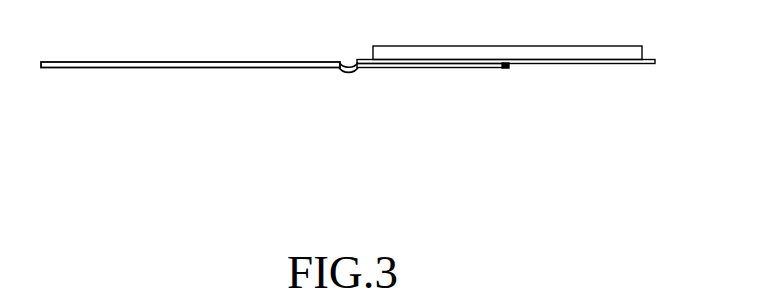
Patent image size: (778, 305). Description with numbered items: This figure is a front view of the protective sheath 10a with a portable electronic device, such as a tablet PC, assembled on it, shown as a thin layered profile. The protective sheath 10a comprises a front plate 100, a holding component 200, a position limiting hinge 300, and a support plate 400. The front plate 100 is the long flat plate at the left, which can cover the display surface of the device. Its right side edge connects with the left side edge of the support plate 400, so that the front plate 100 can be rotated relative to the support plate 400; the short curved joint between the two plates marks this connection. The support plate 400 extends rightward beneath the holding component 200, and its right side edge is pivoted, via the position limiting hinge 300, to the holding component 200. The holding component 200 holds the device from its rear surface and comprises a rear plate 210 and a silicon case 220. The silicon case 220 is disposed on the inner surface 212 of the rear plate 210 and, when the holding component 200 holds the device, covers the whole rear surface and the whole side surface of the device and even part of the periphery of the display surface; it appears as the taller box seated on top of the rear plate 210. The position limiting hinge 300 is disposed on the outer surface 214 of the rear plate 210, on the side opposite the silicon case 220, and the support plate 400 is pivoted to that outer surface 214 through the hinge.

The protective sheath 10a is at (391, 105).
The front plate 100 is at (312, 68).
The support plate 400 is at (419, 68).
The position limiting hinge 300 is at (496, 68).
The holding component 200 is at (549, 81).
The rear plate 210 is at (549, 81).
The silicon case 220 is at (557, 58).
The inner surface 212 is at (651, 54).
The outer surface 214 is at (626, 68).